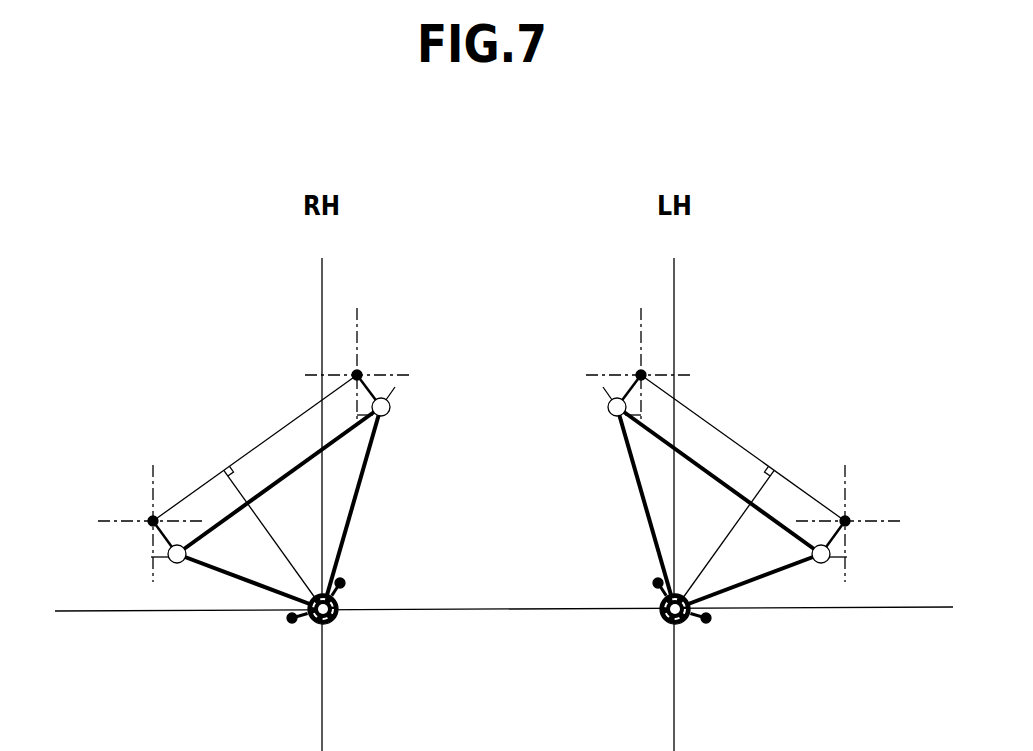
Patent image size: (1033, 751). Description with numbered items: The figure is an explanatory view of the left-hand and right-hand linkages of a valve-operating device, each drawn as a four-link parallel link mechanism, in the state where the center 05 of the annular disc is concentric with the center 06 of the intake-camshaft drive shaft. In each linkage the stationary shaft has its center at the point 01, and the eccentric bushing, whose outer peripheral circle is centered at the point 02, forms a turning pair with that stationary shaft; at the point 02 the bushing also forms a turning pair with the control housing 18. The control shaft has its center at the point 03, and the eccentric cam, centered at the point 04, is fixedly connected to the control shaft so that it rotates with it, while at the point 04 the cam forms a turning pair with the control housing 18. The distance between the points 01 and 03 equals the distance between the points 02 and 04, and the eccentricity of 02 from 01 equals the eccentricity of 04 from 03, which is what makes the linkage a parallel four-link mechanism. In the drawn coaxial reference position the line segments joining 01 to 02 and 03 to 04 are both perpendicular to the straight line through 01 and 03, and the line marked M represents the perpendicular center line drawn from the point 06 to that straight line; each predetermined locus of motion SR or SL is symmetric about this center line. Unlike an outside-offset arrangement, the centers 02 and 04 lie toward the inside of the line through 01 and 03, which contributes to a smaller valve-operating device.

The center O1 01 is at (153, 521).
The center O2 02 is at (177, 563).
The center O3 03 is at (358, 373).
The center O4 04 is at (385, 418).
The center O5 05 is at (322, 630).
The center O6 06 is at (343, 612).
The control housing 18 is at (303, 462).
The perpendicular distance M is at (280, 551).
The predetermined locus of motion SR is at (302, 627).
The predetermined locus of motion SL is at (658, 597).